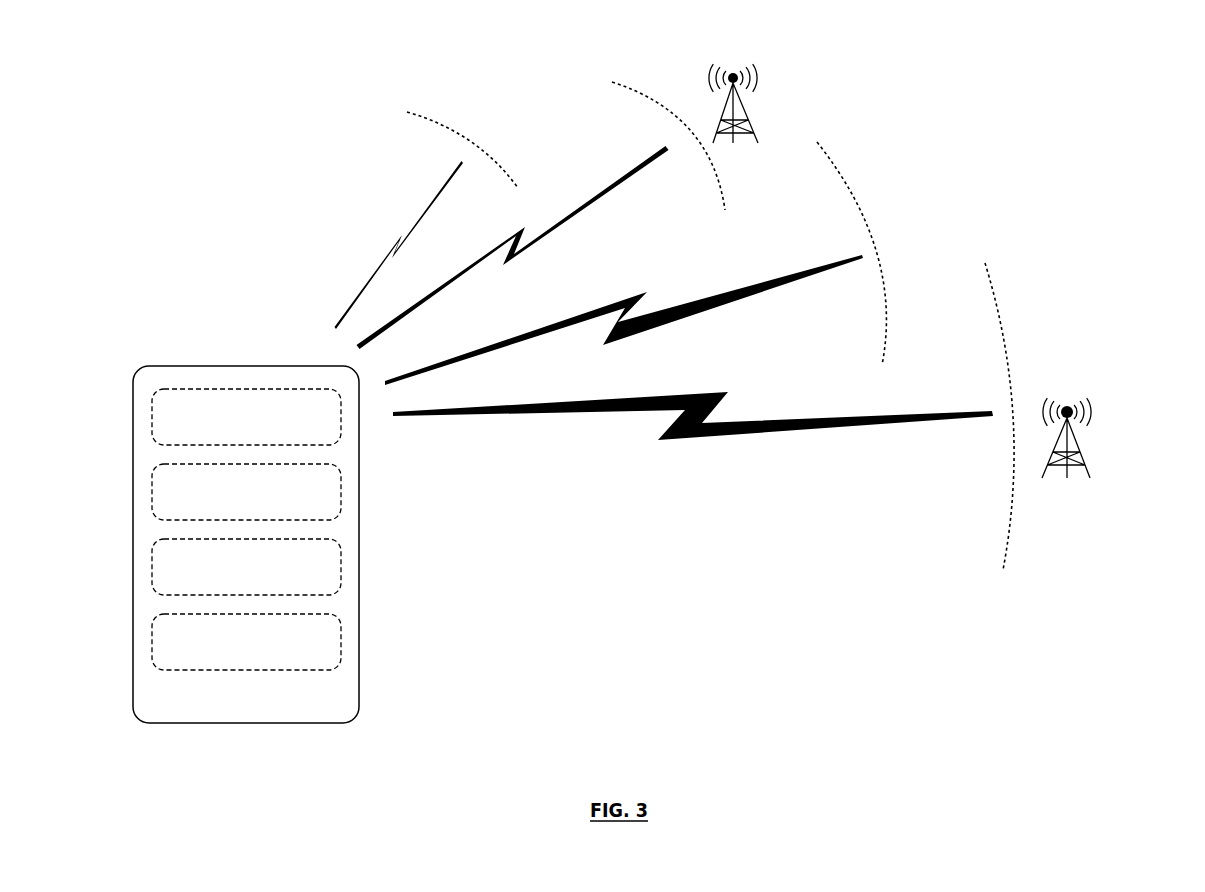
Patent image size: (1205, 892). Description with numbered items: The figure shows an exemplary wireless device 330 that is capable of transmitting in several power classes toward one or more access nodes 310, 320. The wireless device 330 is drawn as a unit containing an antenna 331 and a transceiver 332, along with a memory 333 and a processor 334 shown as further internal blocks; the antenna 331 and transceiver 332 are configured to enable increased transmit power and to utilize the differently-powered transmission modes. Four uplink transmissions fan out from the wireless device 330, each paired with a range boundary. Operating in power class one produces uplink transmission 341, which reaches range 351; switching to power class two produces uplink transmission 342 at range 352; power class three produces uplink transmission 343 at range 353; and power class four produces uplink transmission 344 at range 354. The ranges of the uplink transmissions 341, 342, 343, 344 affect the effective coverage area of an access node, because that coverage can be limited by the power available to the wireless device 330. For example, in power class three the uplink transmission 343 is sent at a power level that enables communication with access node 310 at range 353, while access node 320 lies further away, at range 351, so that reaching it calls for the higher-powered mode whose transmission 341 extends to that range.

The access node 310 is at (745, 120).
The access node 320 is at (1082, 458).
The wireless device 330 is at (141, 722).
The antenna 331 is at (152, 417).
The transceiver 332 is at (152, 492).
The memory 333 is at (152, 567).
The processor 334 is at (152, 641).
The uplink transmission 341 is at (848, 417).
The uplink transmission 342 is at (730, 293).
The uplink transmission 343 is at (627, 175).
The uplink transmission 344 is at (395, 245).
The range 351 is at (992, 287).
The range 352 is at (823, 148).
The range 353 is at (633, 88).
The range 354 is at (422, 112).